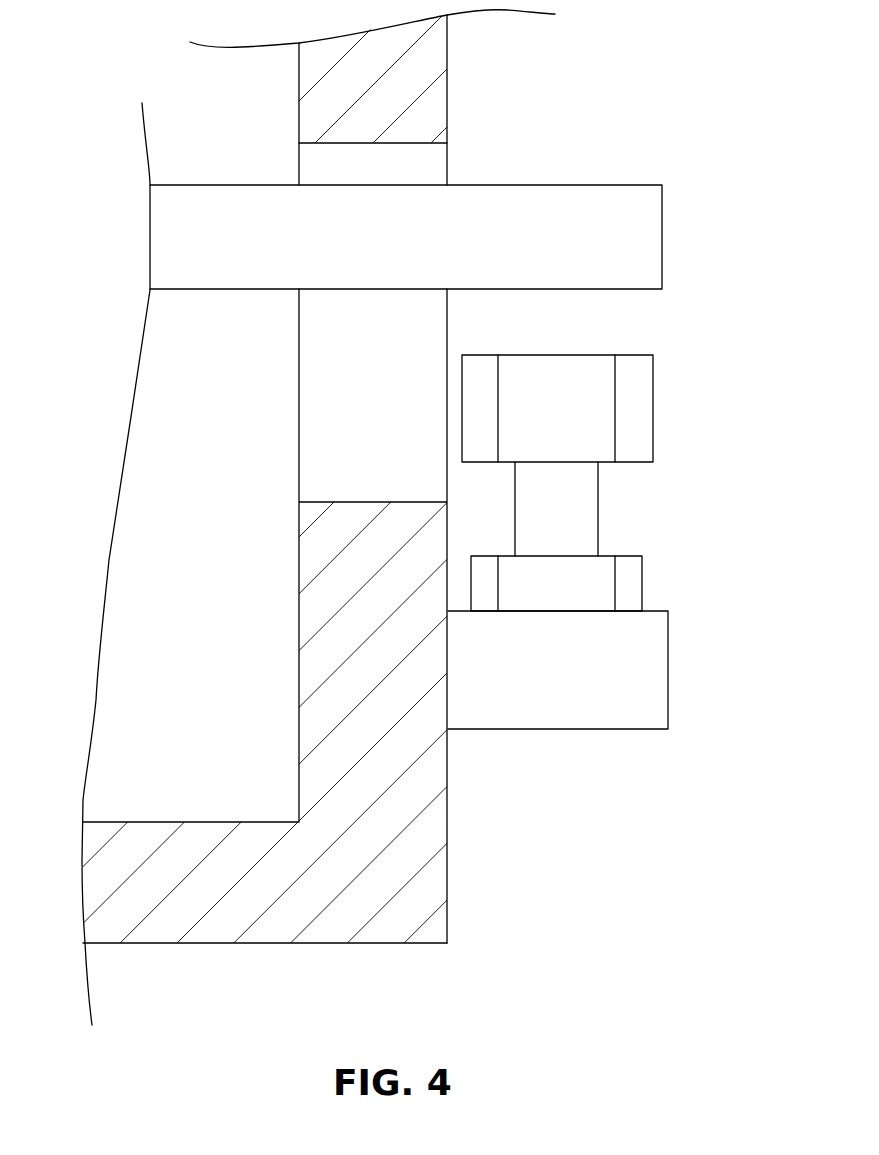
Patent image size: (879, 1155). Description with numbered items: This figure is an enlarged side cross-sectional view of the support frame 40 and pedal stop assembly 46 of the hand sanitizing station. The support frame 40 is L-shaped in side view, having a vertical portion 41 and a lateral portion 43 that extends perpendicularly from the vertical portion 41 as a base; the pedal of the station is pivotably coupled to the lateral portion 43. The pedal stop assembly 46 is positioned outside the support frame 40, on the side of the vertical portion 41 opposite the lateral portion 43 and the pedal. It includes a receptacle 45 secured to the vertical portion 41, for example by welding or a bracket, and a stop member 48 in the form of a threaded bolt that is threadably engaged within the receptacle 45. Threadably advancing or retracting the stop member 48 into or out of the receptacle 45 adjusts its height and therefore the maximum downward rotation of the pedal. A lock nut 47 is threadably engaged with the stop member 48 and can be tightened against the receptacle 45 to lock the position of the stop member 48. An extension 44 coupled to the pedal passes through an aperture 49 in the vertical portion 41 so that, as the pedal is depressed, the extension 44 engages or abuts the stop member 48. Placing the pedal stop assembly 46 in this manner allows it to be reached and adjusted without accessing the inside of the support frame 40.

The support frame 40 is at (470, 875).
The vertical portion 41 is at (448, 88).
The lateral portion 43 is at (162, 943).
The extension 44 is at (662, 215).
The receptacle 45 is at (668, 663).
The pedal stop assembly 46 is at (692, 505).
The lock nut 47 is at (642, 572).
The stop member 48 is at (653, 395).
The aperture 49 is at (333, 143).